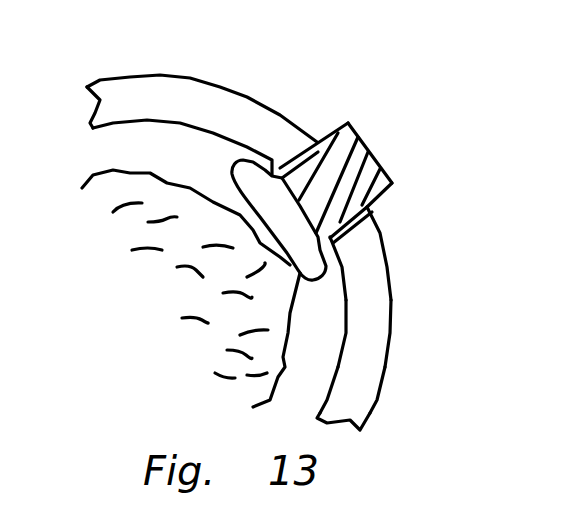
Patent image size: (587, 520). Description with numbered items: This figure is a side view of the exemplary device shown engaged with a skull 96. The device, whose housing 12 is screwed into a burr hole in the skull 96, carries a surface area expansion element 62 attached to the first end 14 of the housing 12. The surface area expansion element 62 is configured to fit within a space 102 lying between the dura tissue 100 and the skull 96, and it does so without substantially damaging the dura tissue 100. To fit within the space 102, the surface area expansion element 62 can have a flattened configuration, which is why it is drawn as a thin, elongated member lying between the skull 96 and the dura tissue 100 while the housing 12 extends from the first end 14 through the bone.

The housing 12 is at (336, 128).
The first end 14 is at (273, 163).
The surface area expansion element 62 is at (353, 221).
The skull 96 is at (390, 398).
The dura tissue 100 is at (389, 333).
The space 102 is at (183, 157).